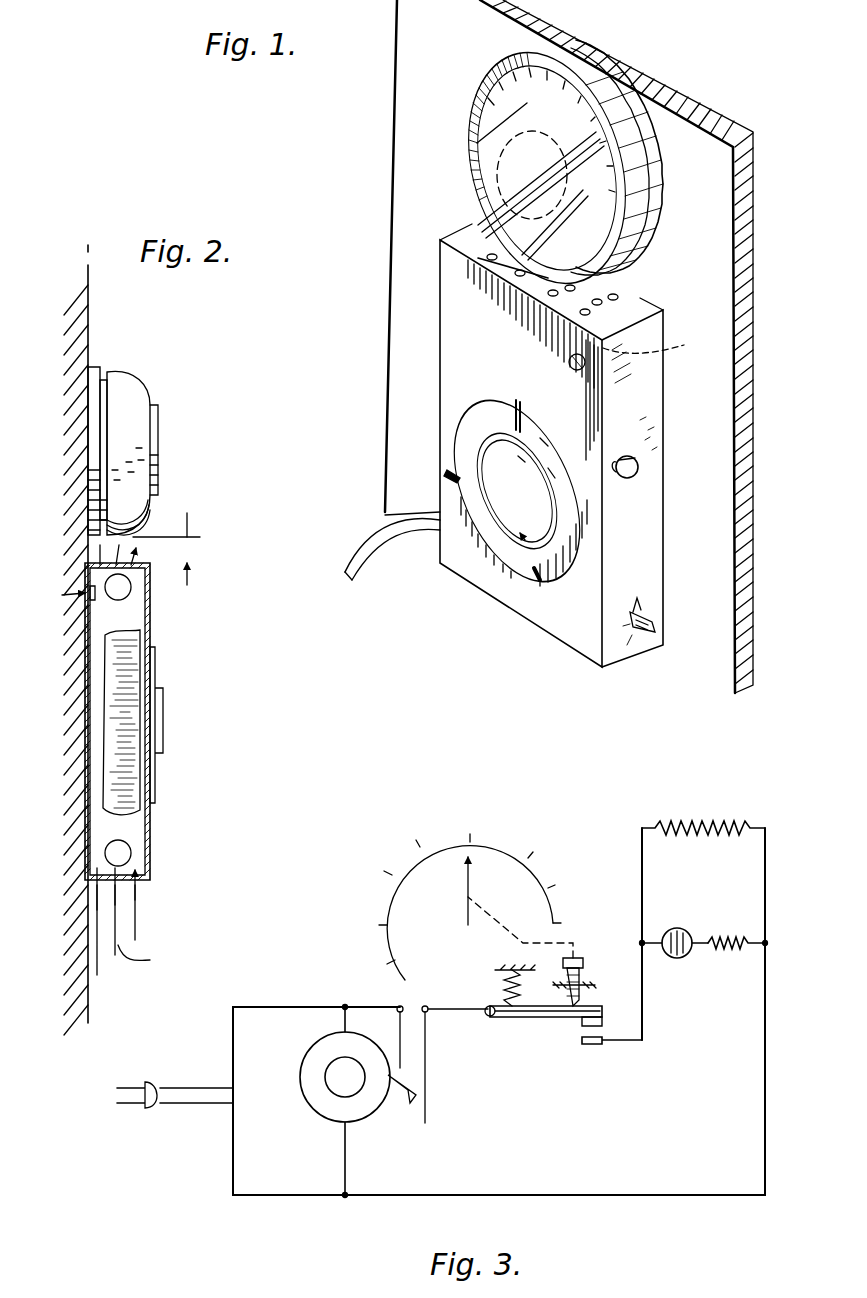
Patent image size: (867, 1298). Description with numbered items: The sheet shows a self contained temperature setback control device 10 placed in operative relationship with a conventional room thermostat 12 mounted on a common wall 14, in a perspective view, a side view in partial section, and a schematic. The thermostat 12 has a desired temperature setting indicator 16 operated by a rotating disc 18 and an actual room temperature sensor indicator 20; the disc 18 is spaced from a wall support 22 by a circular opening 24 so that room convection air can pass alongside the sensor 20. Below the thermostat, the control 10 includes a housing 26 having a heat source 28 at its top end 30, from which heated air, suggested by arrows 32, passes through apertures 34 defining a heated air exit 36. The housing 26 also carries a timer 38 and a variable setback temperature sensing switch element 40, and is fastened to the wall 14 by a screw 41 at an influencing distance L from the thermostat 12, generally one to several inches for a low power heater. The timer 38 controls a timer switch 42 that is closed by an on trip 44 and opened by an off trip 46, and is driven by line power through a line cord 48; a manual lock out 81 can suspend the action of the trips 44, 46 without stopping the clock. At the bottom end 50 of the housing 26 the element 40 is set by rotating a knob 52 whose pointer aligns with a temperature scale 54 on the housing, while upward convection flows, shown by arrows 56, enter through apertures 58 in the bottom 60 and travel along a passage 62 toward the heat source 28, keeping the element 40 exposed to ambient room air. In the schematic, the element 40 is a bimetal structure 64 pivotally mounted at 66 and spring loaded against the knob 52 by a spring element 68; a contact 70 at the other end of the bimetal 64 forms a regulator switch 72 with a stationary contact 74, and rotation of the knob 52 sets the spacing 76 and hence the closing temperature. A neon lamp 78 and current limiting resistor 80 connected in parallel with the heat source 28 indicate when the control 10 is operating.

In FIG. 1, the self contained temperature setback control device 10 is at (672, 472).
In FIG. 1, the room thermostat 12 is at (668, 250).
In FIG. 1, the wall 14 is at (722, 672).
In FIG. 2, the wall 14 is at (80, 292).
In FIG. 1, the desired temperature setting indicator 16 is at (540, 132).
In FIG. 1, the rotating disc 18 is at (470, 103).
In FIG. 2, the rotating disc 18 is at (135, 395).
In FIG. 1, the room temperature sensor indicator 20 is at (498, 195).
In FIG. 1, the wall support 22 is at (638, 150).
In FIG. 2, the wall support 22 is at (95, 365).
In FIG. 1, the circular opening 24 is at (648, 218).
In FIG. 2, the circular opening 24 is at (105, 372).
In FIG. 1, the housing 26 is at (648, 410).
In FIG. 2, the housing 26 is at (150, 618).
In FIG. 1, the heat source 28 is at (655, 338).
In FIG. 2, the heat source 28 is at (125, 592).
In FIG. 3, the heat source 28 is at (733, 825).
In FIG. 2, the top end 30 is at (150, 565).
In FIG. 2, the heated air arrows 32 is at (140, 545).
In FIG. 1, the apertures 34 is at (553, 296).
In FIG. 2, the apertures 34 is at (95, 563).
In FIG. 2, the heated air exit 36 is at (152, 550).
In FIG. 1, the timer 38 is at (478, 403).
In FIG. 2, the timer 38 is at (165, 730).
In FIG. 3, the timer 38 is at (300, 1072).
In FIG. 2, the setback temperature sensing switch element 40 is at (125, 847).
In FIG. 3, the setback temperature sensing switch element 40 is at (555, 1042).
In FIG. 2, the screw 41 is at (92, 602).
In FIG. 3, the timer switch 42 is at (415, 1115).
In FIG. 1, the on trip 44 is at (536, 580).
In FIG. 1, the off trip 46 is at (447, 474).
In FIG. 1, the line cord 48 is at (400, 548).
In FIG. 3, the line cord 48 is at (203, 1122).
In FIG. 2, the bottom end 50 is at (165, 868).
In FIG. 1, the knob 52 is at (648, 634).
In FIG. 3, the knob 52 is at (585, 963).
In FIG. 1, the temperature scale 54 is at (641, 568).
In FIG. 3, the temperature scale 54 is at (443, 818).
In FIG. 2, the air convection arrows 56 is at (160, 952).
In FIG. 2, the bottom apertures 58 is at (137, 882).
In FIG. 2, the bottom 60 is at (105, 920).
In FIG. 2, the passage 62 is at (100, 712).
In FIG. 3, the bimetal structure 64 is at (535, 1022).
In FIG. 3, the pivot 66 is at (488, 1018).
In FIG. 3, the spring element 68 is at (505, 988).
In FIG. 3, the contact 70 is at (605, 1022).
In FIG. 3, the regulator switch 72 is at (622, 1030).
In FIG. 3, the stationary contact 74 is at (593, 1046).
In FIG. 3, the spacing 76 is at (582, 1033).
In FIG. 1, the neon lamp 78 is at (570, 364).
In FIG. 3, the neon lamp 78 is at (670, 927).
In FIG. 3, the current limiting resistor 80 is at (725, 932).
In FIG. 1, the manual lock out 81 is at (628, 478).
In FIG. 2, the distance L is at (200, 556).